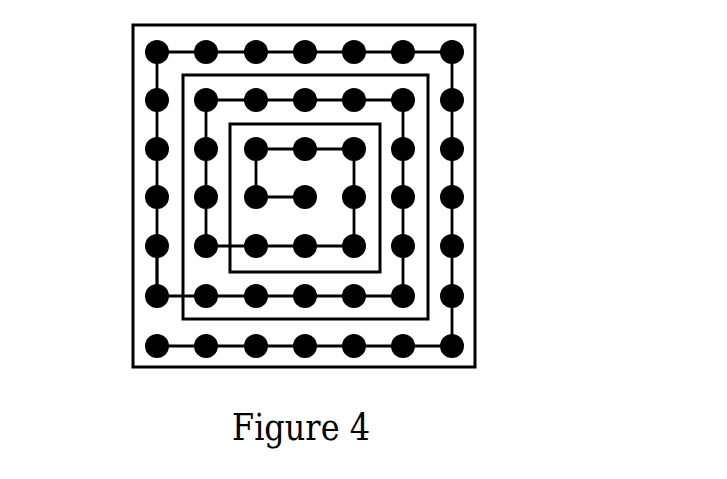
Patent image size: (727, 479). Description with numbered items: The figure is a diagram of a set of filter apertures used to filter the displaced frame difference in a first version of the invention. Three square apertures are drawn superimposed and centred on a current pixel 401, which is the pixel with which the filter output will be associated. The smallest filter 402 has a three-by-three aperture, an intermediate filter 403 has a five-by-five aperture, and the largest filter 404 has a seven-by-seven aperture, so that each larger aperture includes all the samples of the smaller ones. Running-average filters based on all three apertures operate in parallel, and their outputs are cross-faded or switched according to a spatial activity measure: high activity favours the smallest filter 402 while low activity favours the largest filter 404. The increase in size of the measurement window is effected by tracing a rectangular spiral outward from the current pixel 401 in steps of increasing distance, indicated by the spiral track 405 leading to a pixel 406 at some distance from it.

The current pixel 401 is at (316, 188).
The smallest filter 402 is at (384, 221).
The intermediate filter 403 is at (432, 268).
The largest filter 404 is at (482, 336).
The spiral track 405 is at (156, 273).
The pixel at some distance 406 is at (150, 358).